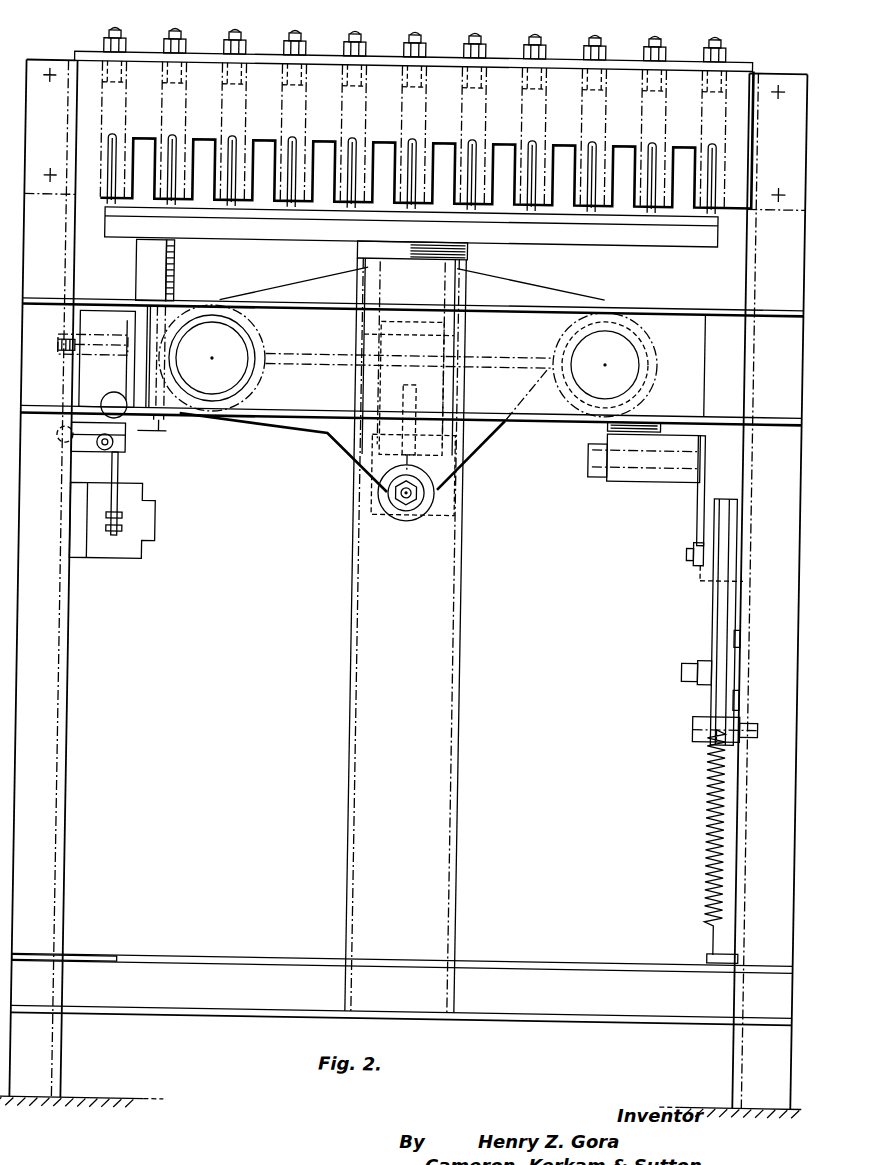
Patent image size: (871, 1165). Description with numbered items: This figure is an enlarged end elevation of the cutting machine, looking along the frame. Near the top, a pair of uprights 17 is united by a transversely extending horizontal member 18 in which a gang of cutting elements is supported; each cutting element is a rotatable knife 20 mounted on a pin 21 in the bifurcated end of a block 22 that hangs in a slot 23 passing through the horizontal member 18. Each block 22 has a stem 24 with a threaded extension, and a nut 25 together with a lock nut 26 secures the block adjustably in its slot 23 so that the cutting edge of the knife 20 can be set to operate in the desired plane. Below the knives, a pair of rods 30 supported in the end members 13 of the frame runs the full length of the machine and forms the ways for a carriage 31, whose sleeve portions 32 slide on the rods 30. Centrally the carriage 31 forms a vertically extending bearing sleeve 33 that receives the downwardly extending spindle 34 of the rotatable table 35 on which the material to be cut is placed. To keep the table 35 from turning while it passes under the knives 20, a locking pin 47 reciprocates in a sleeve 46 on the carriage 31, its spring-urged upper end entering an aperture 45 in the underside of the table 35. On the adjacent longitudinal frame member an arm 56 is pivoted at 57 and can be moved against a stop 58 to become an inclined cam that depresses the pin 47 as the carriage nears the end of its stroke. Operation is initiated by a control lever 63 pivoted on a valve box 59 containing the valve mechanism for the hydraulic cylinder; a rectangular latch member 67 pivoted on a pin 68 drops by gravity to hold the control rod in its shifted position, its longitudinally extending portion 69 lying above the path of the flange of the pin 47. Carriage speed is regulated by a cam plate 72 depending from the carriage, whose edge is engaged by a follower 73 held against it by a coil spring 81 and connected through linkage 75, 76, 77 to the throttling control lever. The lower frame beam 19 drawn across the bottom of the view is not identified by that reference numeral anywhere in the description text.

The transverse member 13 is at (661, 329).
The upright 17 is at (40, 899).
The horizontal member 18 is at (672, 72).
The bottom frame beam 19 is at (580, 982).
The rotatable knife 20 is at (346, 152).
The pin 21 is at (375, 205).
The block 22 is at (286, 133).
The slot 23 is at (240, 140).
The stem 24 is at (350, 88).
The nut 25 is at (403, 50).
The lock nut 26 is at (356, 42).
The rod 30 is at (204, 381).
The carriage 31 is at (527, 403).
The sleeve portion 32 is at (251, 340).
The bearing sleeve 33 is at (453, 349).
The spindle 34 is at (418, 294).
The rotatable table 35 is at (575, 223).
The aperture 45 is at (165, 232).
The sleeve 46 is at (141, 273).
The locking pin 47 is at (170, 302).
The arm 56 is at (118, 367).
The pivot 57 is at (93, 353).
The stop 58 is at (108, 404).
The valve box 59 is at (151, 534).
The control lever 63 is at (116, 467).
The latch member 67 is at (68, 446).
The pin 68 is at (55, 441).
The longitudinally extending portion 69 is at (126, 445).
The cam plate 72 is at (698, 485).
The follower 73 is at (692, 549).
The linkage 75 is at (717, 587).
The linkage 76 is at (722, 708).
The linkage 77 is at (770, 894).
The coil spring 81 is at (716, 811).